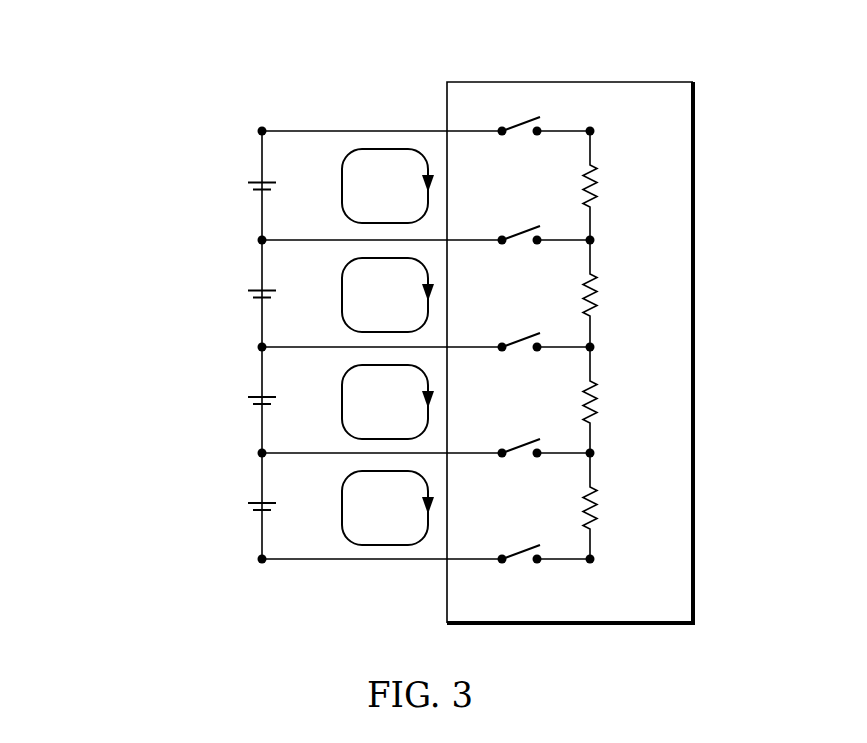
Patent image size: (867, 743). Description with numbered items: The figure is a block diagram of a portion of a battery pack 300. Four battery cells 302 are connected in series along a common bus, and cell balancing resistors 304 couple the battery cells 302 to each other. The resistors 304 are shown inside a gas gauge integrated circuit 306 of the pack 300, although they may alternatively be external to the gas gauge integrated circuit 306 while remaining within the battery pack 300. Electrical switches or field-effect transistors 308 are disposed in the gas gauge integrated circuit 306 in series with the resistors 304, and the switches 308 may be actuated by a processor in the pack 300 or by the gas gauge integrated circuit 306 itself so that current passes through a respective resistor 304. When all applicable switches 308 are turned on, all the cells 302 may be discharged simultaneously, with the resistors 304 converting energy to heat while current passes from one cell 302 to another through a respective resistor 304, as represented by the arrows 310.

The battery pack 300 is at (110, 90).
The battery cells 302 is at (188, 347).
The cell balancing resistors 304 is at (622, 345).
The gas gauge integrated circuit 306 is at (697, 349).
The switches 308 is at (526, 328).
The arrows 310 is at (356, 347).